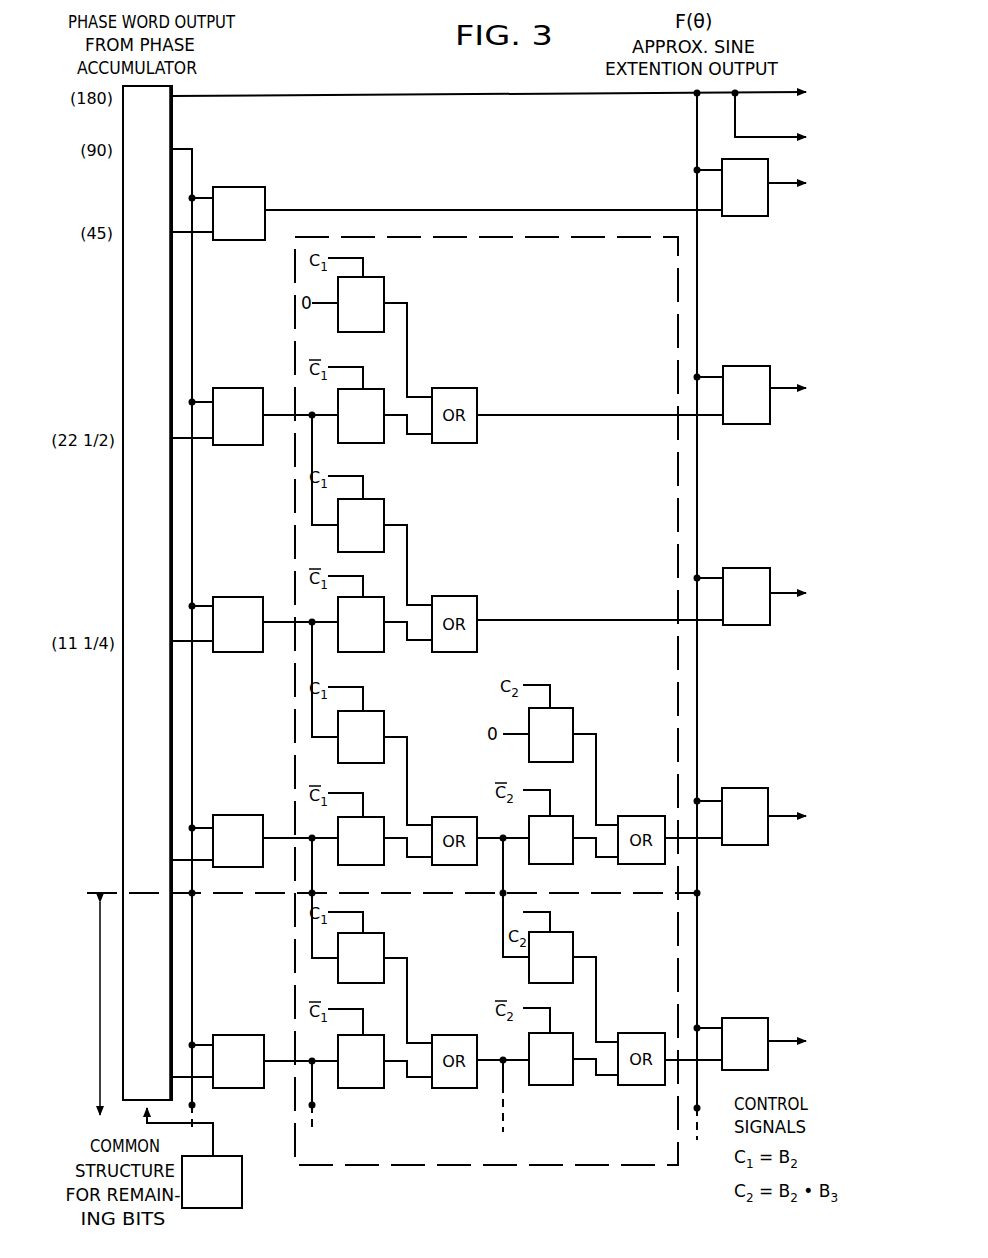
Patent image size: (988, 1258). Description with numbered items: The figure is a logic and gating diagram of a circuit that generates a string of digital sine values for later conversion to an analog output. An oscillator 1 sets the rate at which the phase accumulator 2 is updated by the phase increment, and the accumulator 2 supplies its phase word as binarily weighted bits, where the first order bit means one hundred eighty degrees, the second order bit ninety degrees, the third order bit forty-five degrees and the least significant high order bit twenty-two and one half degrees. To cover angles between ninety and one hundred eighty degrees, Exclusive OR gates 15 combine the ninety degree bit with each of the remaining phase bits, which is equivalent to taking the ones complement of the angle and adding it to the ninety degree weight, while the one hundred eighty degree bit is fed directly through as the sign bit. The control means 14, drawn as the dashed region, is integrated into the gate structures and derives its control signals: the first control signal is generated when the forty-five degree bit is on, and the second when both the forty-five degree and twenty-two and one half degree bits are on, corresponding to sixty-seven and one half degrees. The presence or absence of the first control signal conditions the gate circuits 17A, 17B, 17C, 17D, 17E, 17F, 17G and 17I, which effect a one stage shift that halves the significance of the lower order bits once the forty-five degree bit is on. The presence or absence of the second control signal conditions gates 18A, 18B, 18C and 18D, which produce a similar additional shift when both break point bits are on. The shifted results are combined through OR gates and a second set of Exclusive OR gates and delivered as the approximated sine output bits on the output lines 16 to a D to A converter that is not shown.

The oscillator 1 is at (242, 1205).
The phase accumulator 2 is at (172, 92).
The control means 14 is at (295, 310).
The Exclusive OR 15 is at (300, 210).
The output line 16 is at (779, 228).
The gate circuit 17A is at (384, 292).
The gate circuit 17B is at (380, 441).
The gate circuit 17C is at (384, 513).
The gate circuit 17D is at (380, 647).
The gate circuit 17E is at (384, 724).
The gate circuit 17F is at (378, 817).
The gate circuit 17G is at (380, 935).
The gate circuit 17I is at (372, 1088).
The gate 18A is at (573, 718).
The gate 18B is at (565, 816).
The gate 18C is at (573, 937).
The gate 18D is at (553, 1087).